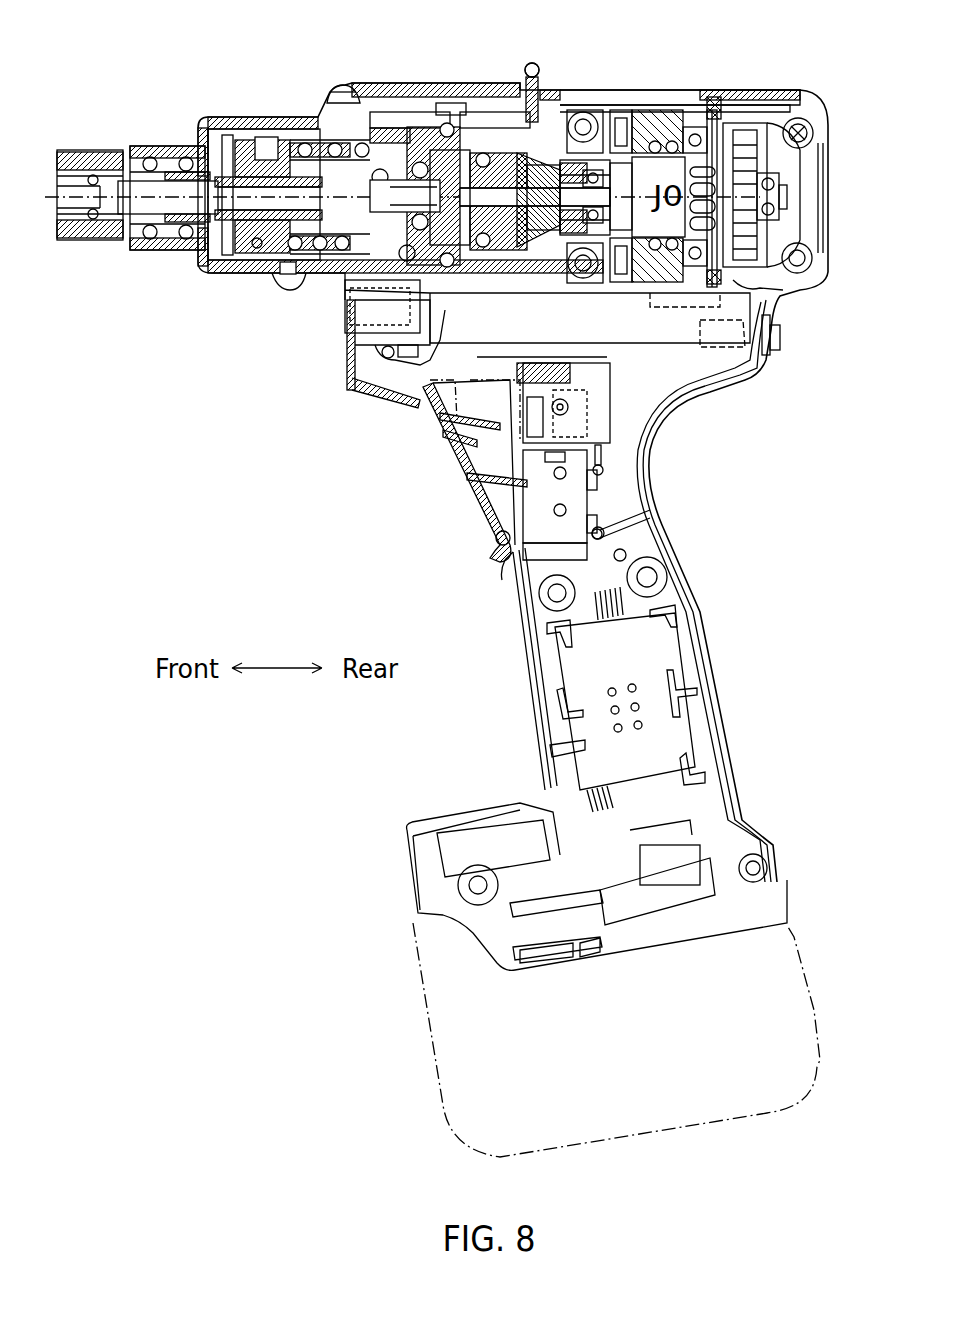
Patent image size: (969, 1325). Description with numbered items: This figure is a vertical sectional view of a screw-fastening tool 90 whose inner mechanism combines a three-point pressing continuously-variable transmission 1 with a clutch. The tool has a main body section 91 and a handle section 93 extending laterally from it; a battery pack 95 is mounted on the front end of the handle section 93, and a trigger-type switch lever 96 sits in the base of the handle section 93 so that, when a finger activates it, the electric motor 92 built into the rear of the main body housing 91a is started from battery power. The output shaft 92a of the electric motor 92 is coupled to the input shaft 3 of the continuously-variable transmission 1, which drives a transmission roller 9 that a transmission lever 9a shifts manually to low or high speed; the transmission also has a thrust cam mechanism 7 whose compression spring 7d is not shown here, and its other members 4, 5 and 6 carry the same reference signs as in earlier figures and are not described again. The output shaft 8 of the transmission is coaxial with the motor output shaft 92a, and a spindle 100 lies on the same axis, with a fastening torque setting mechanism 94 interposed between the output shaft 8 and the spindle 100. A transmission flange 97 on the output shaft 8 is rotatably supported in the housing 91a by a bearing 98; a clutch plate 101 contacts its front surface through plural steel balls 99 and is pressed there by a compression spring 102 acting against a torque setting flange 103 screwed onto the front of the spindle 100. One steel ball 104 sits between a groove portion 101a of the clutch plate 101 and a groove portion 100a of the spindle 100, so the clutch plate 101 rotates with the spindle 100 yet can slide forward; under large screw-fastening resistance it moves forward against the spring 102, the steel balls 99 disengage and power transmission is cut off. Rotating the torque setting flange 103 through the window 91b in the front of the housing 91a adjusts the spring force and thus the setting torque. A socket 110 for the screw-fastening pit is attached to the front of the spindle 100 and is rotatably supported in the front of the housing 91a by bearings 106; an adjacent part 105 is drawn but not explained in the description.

The continuously-variable transmission 1 is at (498, 142).
The input shaft 3 is at (608, 140).
The motor rotor shaft 4 is at (578, 150).
The bearing 5 is at (560, 150).
The output shaft 6 is at (505, 240).
The thrust cam mechanism 7 is at (477, 250).
The compression spring 7d is at (437, 320).
The output shaft 8 is at (440, 310).
The transmission roller 9 is at (548, 130).
The transmission lever 9a is at (532, 62).
The screw-fastening tool 90 is at (340, 453).
The main body section 91 is at (630, 87).
The main body housing 91a is at (675, 105).
The window 91b is at (262, 132).
The electric motor 92 is at (722, 105).
The output shaft 92a is at (670, 175).
The handle section 93 is at (700, 608).
The fastening torque setting mechanism 94 is at (355, 255).
The battery pack 95 is at (455, 1004).
The switch lever 96 is at (467, 507).
The transmission flange 97 is at (470, 135).
The bearing 98 is at (450, 140).
The steel balls 99 is at (350, 320).
The spindle 100 is at (335, 205).
The groove portion 100a is at (320, 280).
The clutch plate 101 is at (405, 255).
The groove portion 101a is at (380, 169).
The compression spring 102 is at (335, 140).
The torque setting flange 103 is at (247, 140).
The steel ball 104 is at (385, 113).
The anvil 105 is at (188, 160).
The bearings 106 is at (150, 158).
The socket 110 is at (90, 157).